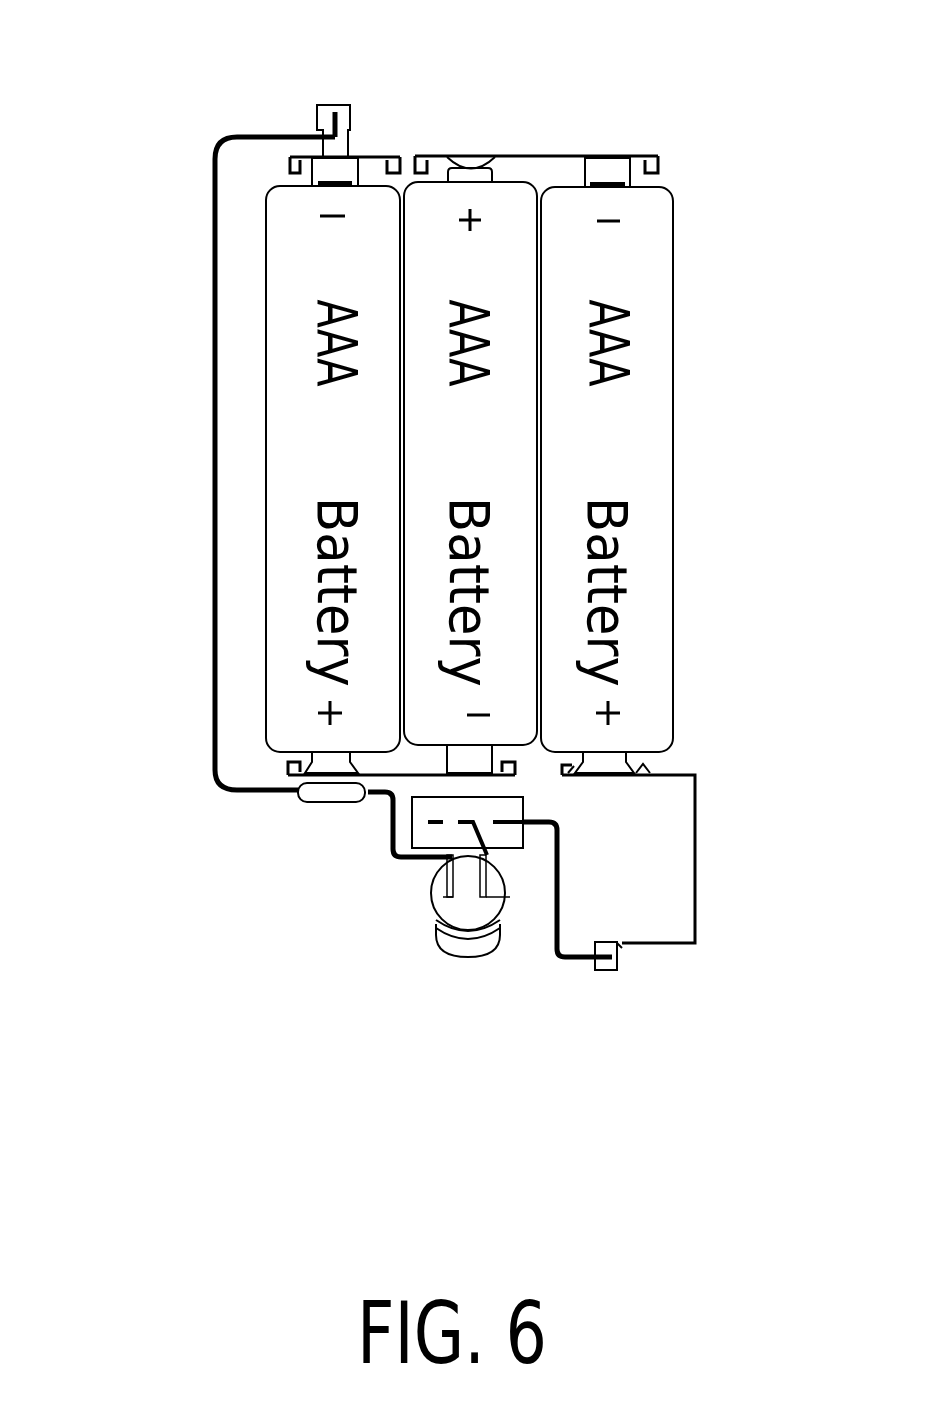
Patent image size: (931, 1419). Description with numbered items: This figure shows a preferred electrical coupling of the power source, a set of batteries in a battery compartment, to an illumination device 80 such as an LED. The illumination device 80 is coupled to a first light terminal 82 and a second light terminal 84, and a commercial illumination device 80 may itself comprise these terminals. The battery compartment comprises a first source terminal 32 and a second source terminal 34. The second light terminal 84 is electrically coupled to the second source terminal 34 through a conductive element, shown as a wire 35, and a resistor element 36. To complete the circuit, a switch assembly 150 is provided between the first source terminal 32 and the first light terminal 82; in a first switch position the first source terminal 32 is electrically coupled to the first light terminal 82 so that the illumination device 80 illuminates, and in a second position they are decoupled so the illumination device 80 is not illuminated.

The first source terminal 32 is at (672, 772).
The second source terminal 34 is at (347, 108).
The wire 35 is at (213, 417).
The resistor element 36 is at (313, 795).
The illumination device 80 is at (465, 948).
The first light terminal 82 is at (508, 897).
The second light terminal 84 is at (443, 897).
The switch assembly 150 is at (498, 808).